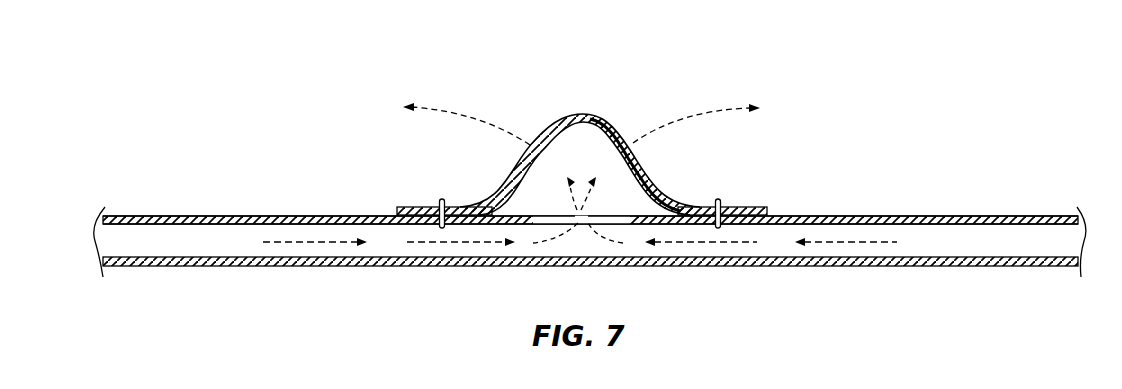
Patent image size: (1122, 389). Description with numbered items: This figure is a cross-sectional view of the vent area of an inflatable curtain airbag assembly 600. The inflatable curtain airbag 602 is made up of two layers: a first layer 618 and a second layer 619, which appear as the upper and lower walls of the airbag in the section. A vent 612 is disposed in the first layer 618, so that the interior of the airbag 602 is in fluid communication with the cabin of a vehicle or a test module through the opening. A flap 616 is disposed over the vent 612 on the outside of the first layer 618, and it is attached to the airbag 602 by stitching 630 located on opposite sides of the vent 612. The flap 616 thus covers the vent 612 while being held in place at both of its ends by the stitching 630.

The inflatable curtain airbag assembly 600 is at (705, 77).
The inflatable curtain airbag 602 is at (579, 240).
The vent 612 is at (578, 223).
The flap 616 is at (565, 120).
The first layer 618 is at (112, 215).
The second layer 619 is at (105, 267).
The stitching 630 is at (440, 202).